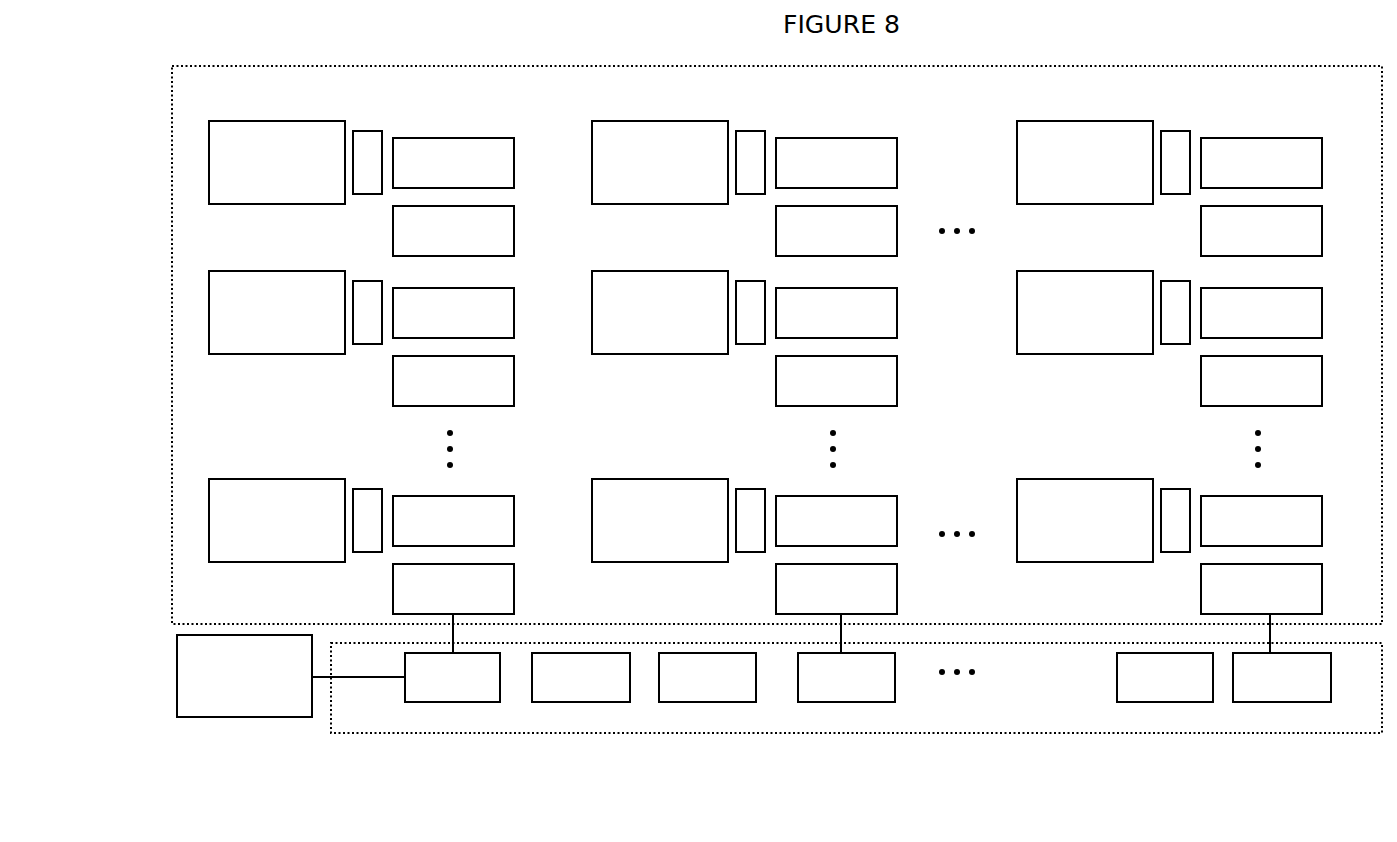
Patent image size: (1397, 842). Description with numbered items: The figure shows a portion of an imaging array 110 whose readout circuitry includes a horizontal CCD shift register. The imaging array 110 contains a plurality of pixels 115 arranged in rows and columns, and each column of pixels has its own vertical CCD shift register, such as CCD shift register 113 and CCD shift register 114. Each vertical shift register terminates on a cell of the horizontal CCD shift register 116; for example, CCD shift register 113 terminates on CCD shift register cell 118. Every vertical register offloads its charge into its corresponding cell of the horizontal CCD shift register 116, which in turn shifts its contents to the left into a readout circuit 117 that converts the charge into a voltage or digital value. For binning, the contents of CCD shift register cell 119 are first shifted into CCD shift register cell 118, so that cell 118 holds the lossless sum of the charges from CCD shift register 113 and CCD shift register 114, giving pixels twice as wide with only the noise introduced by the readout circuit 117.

The imaging array 110 is at (166, 69).
The CCD shift register 113 is at (453, 135).
The CCD shift register 114 is at (838, 133).
The pixel 115 is at (288, 341).
The horizontal CCD shift register 116 is at (538, 733).
The readout circuit 117 is at (235, 712).
The CCD shift register cell 118 is at (440, 690).
The CCD shift register cell 119 is at (828, 687).